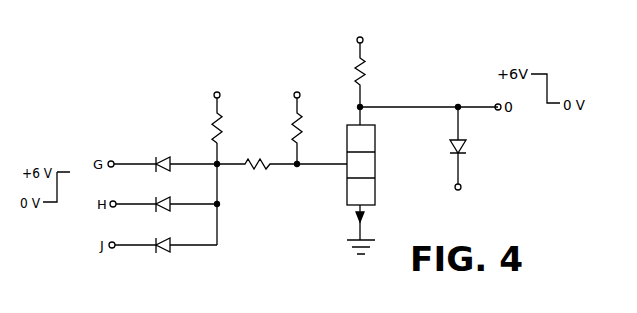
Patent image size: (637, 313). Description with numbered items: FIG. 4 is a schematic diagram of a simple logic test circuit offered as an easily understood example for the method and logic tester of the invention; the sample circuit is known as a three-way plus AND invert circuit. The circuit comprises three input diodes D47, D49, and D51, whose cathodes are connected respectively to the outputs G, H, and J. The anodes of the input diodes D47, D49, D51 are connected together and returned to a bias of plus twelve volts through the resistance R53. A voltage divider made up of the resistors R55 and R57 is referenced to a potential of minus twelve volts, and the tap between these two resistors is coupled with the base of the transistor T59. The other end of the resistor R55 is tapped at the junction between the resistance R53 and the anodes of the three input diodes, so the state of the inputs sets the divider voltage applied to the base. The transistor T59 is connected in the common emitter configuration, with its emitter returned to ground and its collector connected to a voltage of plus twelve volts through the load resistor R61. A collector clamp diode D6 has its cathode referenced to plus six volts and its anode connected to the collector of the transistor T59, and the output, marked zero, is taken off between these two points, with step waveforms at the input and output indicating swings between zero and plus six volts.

The input diode D47 is at (155, 169).
The input diode D49 is at (157, 208).
The input diode D51 is at (157, 249).
The resistance R53 is at (223, 133).
The resistor R55 is at (257, 171).
The resistor R57 is at (303, 134).
The load resistor R61 is at (365, 80).
The transistor T59 is at (376, 172).
The diode D6 is at (466, 150).